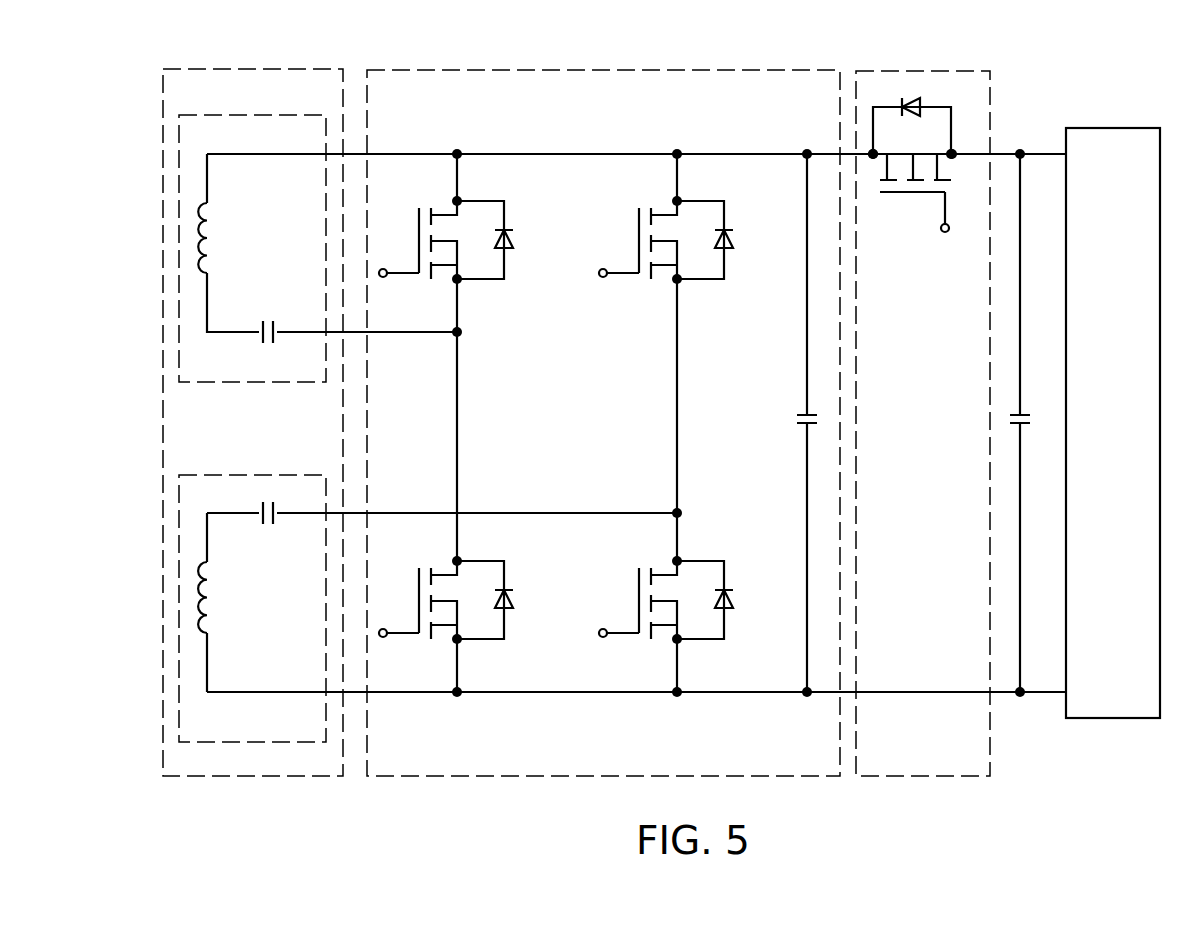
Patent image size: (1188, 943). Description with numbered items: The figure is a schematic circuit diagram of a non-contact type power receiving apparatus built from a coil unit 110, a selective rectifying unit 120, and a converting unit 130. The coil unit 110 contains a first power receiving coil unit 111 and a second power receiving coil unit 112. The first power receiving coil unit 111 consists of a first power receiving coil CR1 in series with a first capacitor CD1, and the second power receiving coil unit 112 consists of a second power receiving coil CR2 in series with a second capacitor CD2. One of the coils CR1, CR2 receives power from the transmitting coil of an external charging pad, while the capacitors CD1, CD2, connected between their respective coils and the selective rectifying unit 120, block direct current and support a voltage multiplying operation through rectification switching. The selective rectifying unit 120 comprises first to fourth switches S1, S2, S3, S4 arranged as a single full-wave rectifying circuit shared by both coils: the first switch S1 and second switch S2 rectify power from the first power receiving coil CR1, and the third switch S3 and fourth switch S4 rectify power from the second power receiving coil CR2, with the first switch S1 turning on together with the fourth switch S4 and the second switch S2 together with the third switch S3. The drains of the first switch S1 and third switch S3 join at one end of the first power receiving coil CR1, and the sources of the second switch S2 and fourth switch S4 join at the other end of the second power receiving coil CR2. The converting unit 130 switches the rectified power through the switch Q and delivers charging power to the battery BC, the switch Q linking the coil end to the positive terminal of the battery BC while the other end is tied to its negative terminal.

The coil unit 110 is at (245, 69).
The first power receiving coil unit 111 is at (245, 115).
The second power receiving coil unit 112 is at (245, 475).
The selective rectifying unit 120 is at (608, 70).
The converting unit 130 is at (967, 71).
The first power receiving coil CR1 is at (227, 238).
The first capacitor CD1 is at (268, 318).
The second power receiving coil CR2 is at (227, 597).
The second capacitor CD2 is at (266, 529).
The first switch S1 is at (446, 257).
The second switch S2 is at (446, 616).
The third switch S3 is at (666, 257).
The fourth switch S4 is at (666, 616).
The switch Q is at (925, 165).
The battery BC is at (1110, 128).